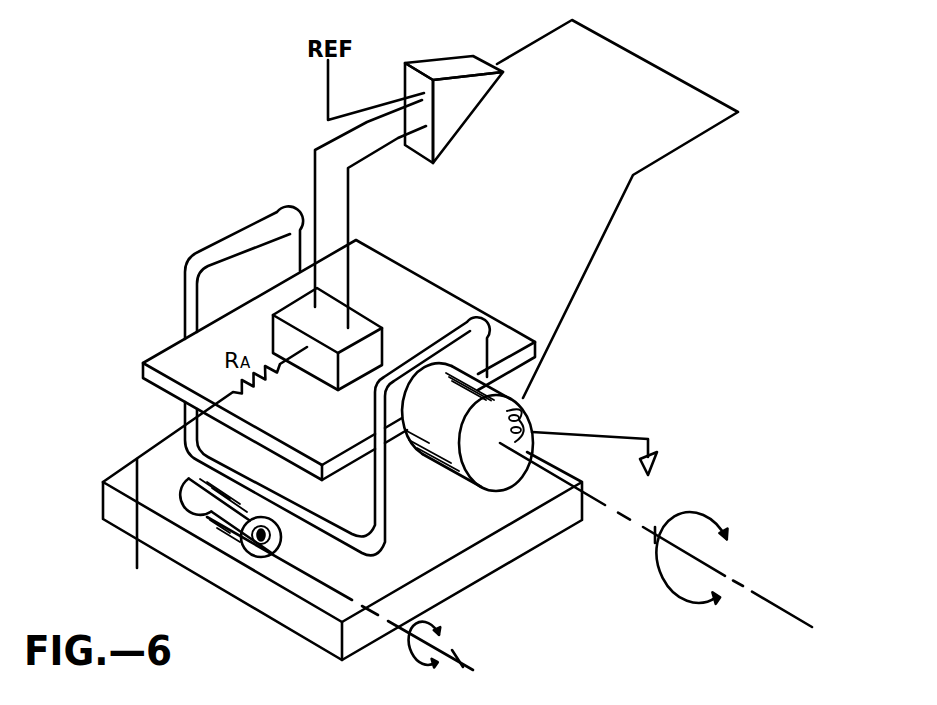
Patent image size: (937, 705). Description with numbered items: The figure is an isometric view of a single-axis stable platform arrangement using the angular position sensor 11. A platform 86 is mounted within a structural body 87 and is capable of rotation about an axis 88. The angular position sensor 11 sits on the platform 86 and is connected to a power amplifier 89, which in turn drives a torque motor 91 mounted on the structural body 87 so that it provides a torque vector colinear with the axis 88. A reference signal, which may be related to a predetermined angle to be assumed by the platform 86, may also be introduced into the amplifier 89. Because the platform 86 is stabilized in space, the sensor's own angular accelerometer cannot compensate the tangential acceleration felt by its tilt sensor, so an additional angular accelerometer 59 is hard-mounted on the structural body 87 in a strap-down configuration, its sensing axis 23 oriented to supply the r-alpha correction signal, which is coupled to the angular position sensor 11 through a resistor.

The power amplifier 89 is at (443, 63).
The platform 86 is at (432, 282).
The angular position sensor 11 is at (360, 318).
The torque motor 91 is at (440, 470).
The structural body 87 is at (484, 573).
The axis 88 is at (650, 533).
The additional angular accelerometer 59 is at (230, 540).
The sensing axis 23 is at (464, 657).